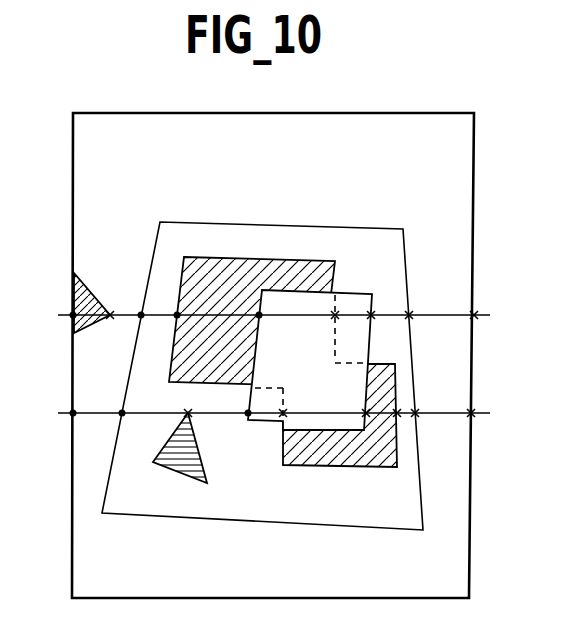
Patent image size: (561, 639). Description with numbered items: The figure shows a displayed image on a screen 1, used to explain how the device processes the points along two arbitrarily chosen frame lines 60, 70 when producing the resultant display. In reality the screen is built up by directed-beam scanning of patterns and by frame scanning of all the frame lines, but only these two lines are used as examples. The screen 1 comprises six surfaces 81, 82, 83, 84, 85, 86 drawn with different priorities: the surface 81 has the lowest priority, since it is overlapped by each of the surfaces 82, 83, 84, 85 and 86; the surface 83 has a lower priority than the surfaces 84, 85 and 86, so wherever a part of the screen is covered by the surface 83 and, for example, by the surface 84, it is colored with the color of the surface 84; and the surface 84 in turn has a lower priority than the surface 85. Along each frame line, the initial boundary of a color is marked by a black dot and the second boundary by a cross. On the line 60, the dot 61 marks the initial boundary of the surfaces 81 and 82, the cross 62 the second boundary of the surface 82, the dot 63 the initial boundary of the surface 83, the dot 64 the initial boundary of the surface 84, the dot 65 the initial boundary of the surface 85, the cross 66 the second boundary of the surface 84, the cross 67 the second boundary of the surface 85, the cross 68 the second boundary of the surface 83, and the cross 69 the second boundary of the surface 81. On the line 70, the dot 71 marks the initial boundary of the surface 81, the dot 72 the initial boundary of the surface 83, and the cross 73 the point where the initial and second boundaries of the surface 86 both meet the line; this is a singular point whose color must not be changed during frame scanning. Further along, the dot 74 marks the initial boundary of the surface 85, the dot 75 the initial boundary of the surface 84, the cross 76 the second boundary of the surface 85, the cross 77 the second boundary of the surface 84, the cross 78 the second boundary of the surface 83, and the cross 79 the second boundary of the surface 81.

The screen 1 is at (264, 112).
The frame line 60 is at (433, 311).
The frame line 70 is at (438, 410).
The dot 61 is at (70, 318).
The cross 62 is at (112, 319).
The dot 63 is at (143, 312).
The dot 64 is at (172, 320).
The dot 65 is at (261, 320).
The cross 66 is at (333, 320).
The cross 67 is at (373, 319).
The cross 68 is at (412, 318).
The cross 69 is at (477, 316).
The dot 71 is at (70, 416).
The dot 72 is at (123, 417).
The cross 73 is at (192, 417).
The dot 74 is at (247, 418).
The dot 75 is at (286, 410).
The cross 76 is at (362, 411).
The cross 77 is at (403, 468).
The cross 78 is at (417, 418).
The cross 79 is at (476, 417).
The surface 81 is at (267, 166).
The surface 82 is at (97, 300).
The surface 83 is at (326, 238).
The surface 84 is at (235, 278).
The surface 85 is at (353, 295).
The surface 86 is at (185, 466).